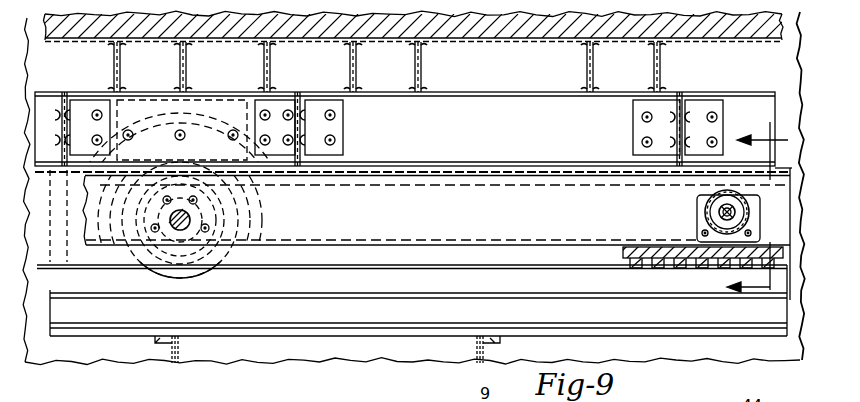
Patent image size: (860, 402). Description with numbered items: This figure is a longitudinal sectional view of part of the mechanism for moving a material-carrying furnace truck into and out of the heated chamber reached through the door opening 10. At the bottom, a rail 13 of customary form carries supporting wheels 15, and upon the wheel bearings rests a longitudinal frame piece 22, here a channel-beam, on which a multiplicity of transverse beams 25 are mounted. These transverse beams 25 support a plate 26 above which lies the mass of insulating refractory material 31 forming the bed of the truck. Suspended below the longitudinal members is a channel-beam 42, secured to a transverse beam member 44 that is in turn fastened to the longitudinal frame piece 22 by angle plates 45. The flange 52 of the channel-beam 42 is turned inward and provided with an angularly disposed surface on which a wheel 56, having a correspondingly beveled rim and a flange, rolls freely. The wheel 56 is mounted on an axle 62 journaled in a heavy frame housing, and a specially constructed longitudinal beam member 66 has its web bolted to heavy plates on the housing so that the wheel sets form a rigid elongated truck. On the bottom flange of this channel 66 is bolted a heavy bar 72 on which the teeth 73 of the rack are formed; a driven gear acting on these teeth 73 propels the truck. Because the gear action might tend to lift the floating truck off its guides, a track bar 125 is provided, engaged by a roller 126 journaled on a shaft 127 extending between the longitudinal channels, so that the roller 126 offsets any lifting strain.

The door opening 10 is at (757, 218).
The rail 13 is at (422, 317).
The supporting wheel 15 is at (215, 278).
The longitudinal frame piece 22 is at (502, 110).
The transverse beam 25 is at (121, 66).
The plate 26 is at (738, 42).
The insulating refractory material 31 is at (762, 32).
The channel-beam 42 is at (560, 257).
The transverse beam member 44 is at (50, 93).
The angle plate 45 is at (82, 110).
The flange 52 is at (372, 262).
The wheel 56 is at (185, 255).
The axle 62 is at (176, 232).
The longitudinal beam member 66 is at (538, 202).
The bar 72 is at (630, 252).
The teeth 73 is at (692, 262).
The track bar 125 is at (517, 178).
The roller 126 is at (708, 208).
The shaft 127 is at (722, 213).